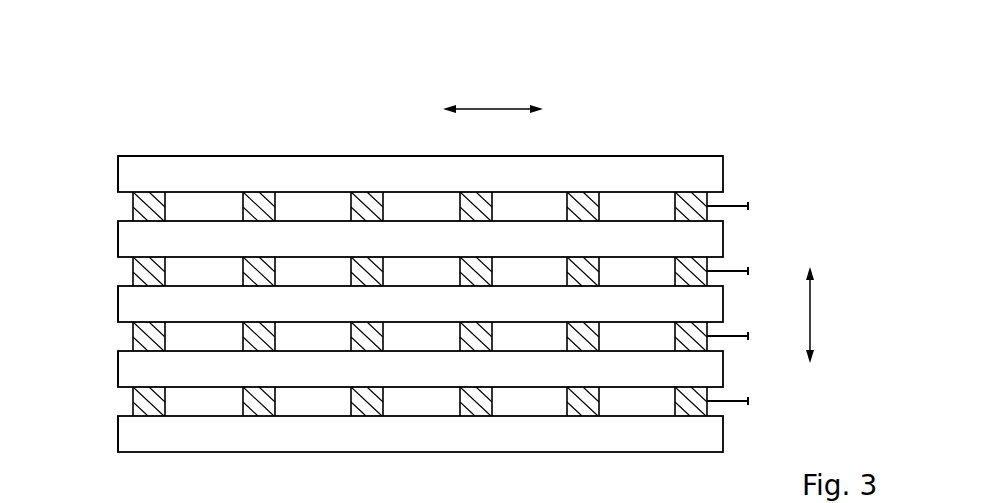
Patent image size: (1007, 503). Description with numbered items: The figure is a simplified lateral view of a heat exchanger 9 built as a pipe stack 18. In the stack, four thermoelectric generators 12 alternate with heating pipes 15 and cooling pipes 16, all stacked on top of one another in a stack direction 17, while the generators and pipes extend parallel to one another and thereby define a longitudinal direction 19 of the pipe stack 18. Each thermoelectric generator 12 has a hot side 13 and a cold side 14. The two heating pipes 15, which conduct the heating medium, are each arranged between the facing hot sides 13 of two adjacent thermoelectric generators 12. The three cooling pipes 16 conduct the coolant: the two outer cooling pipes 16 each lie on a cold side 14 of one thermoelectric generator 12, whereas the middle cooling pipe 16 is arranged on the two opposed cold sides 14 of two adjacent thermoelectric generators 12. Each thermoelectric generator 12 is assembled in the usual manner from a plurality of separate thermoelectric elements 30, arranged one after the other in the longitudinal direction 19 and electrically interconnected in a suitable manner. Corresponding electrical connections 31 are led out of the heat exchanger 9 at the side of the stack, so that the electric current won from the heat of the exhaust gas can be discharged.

The heat exchanger 9 is at (712, 124).
The thermoelectric generator 12 is at (121, 208).
The hot side 13 is at (527, 222).
The cold side 14 is at (637, 190).
The heating pipe 15 is at (106, 240).
The cooling pipe 16 is at (106, 174).
The stack direction 17 is at (812, 310).
The pipe stack 18 is at (199, 136).
The longitudinal direction 19 is at (493, 108).
The thermoelectric element 30 is at (237, 207).
The electrical connection 31 is at (730, 203).